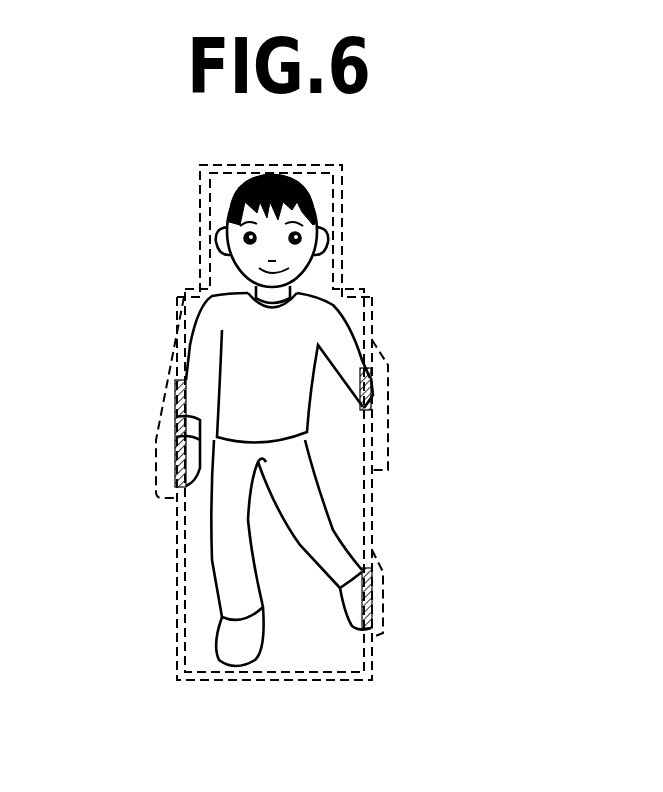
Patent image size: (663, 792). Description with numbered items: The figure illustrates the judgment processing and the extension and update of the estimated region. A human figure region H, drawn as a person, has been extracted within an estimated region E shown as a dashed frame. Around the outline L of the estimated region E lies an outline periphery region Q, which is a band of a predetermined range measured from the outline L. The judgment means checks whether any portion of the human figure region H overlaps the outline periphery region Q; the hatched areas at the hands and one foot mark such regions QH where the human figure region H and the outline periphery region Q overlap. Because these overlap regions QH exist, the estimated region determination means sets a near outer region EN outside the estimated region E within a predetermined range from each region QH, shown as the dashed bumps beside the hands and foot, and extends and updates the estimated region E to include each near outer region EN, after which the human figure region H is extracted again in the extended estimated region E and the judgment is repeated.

The estimated region E is at (225, 165).
The human figure region H is at (300, 318).
The outline L is at (368, 297).
The outline periphery region Q is at (372, 328).
The overlap region QH is at (371, 379).
The near outer region EN is at (383, 433).